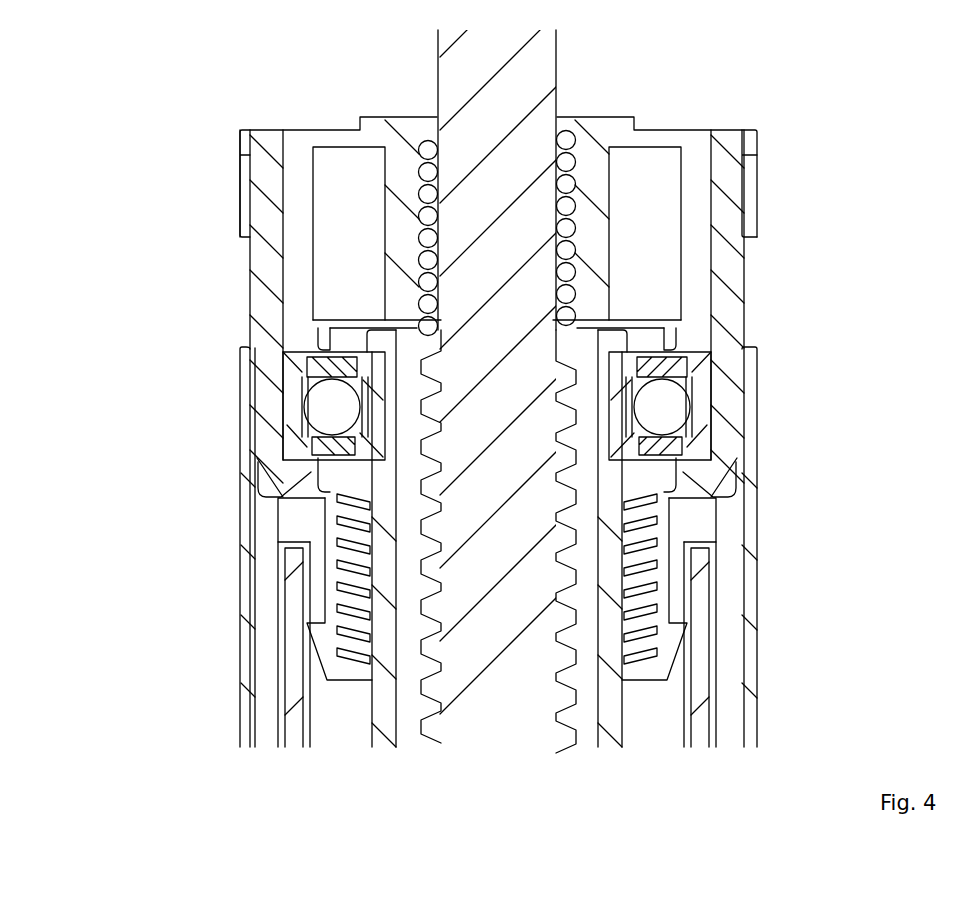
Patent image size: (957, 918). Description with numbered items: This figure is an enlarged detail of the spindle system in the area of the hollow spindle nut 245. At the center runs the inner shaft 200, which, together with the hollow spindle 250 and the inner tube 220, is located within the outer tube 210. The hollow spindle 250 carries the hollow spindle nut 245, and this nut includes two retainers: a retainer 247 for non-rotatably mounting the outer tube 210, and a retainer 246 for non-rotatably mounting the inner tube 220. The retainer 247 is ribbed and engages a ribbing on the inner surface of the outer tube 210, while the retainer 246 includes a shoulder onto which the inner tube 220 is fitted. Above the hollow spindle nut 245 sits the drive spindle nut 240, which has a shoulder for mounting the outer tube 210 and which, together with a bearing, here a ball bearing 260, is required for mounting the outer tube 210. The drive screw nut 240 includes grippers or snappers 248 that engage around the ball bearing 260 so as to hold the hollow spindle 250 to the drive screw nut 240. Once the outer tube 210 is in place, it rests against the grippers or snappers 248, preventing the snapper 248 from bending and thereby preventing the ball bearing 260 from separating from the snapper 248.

The inner shaft 200 is at (425, 70).
The drive spindle nut 240 is at (238, 272).
The ball bearing 260 is at (320, 412).
The outer tube 210 is at (228, 469).
The retainer for non-rotatably mounting the outer tube 247 is at (278, 522).
The retainer for non-rotatably mounting the inner tube 246 is at (308, 605).
The inner tube 220 is at (271, 661).
The hollow spindle 250 is at (363, 734).
The grippers or snappers 248 is at (732, 475).
The hollow spindle nut 245 is at (715, 523).